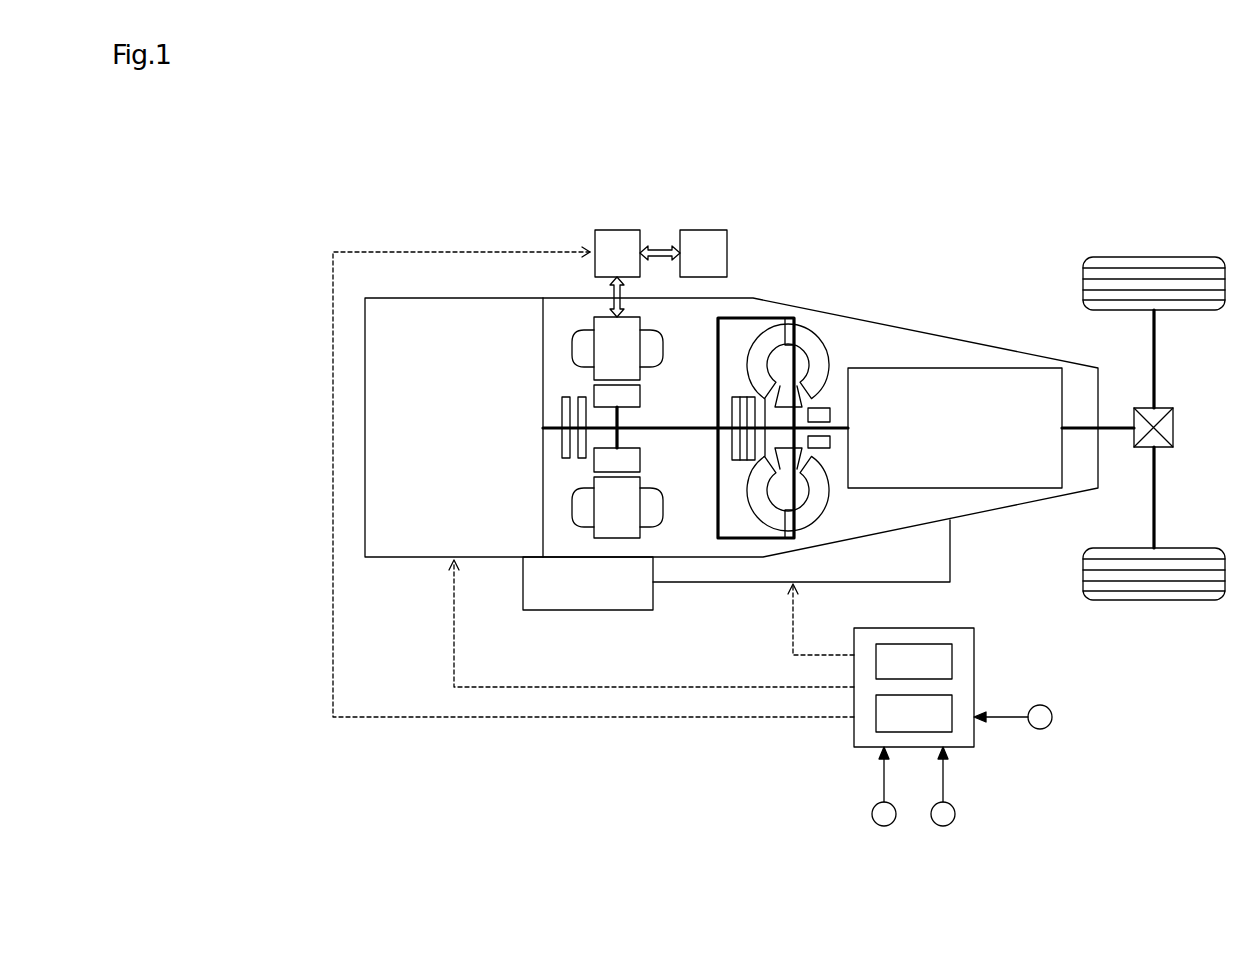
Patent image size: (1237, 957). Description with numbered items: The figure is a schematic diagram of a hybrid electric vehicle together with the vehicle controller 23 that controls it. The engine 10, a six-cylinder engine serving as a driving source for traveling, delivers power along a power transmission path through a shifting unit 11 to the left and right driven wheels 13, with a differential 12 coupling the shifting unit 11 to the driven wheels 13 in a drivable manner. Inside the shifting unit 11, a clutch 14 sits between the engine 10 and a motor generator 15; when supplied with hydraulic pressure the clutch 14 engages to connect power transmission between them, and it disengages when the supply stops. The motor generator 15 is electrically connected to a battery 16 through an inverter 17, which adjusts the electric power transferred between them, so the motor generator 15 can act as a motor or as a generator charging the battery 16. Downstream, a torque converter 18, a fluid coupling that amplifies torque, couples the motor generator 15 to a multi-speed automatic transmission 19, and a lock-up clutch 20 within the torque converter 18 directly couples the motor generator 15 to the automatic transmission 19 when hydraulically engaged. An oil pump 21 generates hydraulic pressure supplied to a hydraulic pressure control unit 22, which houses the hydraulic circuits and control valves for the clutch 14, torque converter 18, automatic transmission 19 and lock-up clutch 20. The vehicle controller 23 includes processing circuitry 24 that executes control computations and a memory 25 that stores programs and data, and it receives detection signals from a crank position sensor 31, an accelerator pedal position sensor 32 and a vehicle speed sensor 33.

The engine 10 is at (403, 560).
The shifting unit 11 is at (1003, 512).
The differential 12 is at (1160, 408).
The driven wheels 13 is at (1190, 312).
The clutch 14 is at (562, 443).
The motor generator 15 is at (663, 348).
The battery 16 is at (727, 250).
The inverter 17 is at (594, 266).
The torque converter 18 is at (828, 337).
The automatic transmission 19 is at (848, 488).
The lock-up clutch 20 is at (732, 415).
The oil pump 21 is at (588, 612).
The hydraulic pressure control unit 22 is at (716, 585).
The vehicle controller 23 is at (975, 648).
The processing circuitry 24 is at (952, 660).
The memory 25 is at (952, 722).
The crank position sensor 31 is at (1052, 717).
The accelerator pedal position sensor 32 is at (943, 826).
The vehicle speed sensor 33 is at (884, 826).